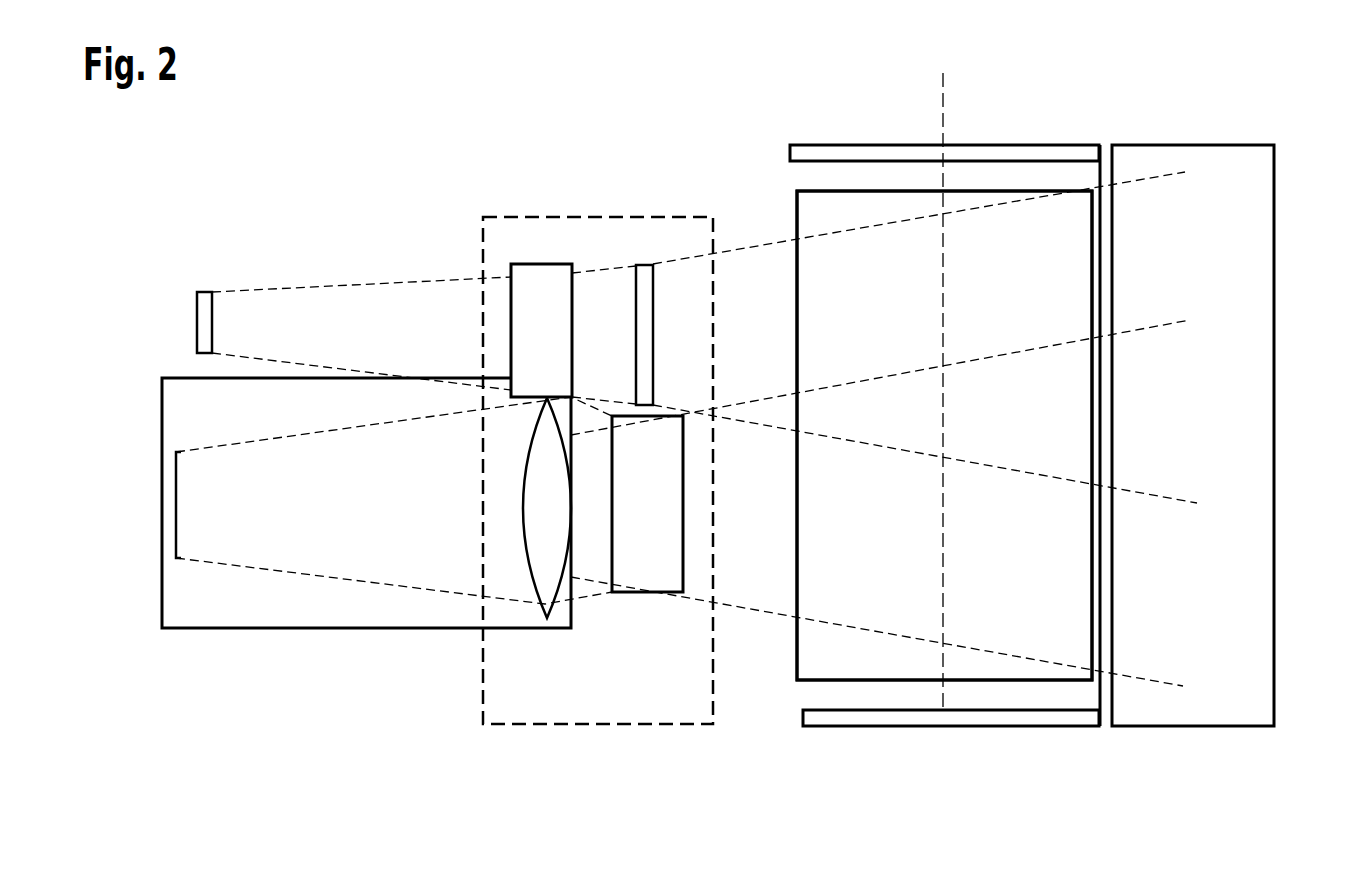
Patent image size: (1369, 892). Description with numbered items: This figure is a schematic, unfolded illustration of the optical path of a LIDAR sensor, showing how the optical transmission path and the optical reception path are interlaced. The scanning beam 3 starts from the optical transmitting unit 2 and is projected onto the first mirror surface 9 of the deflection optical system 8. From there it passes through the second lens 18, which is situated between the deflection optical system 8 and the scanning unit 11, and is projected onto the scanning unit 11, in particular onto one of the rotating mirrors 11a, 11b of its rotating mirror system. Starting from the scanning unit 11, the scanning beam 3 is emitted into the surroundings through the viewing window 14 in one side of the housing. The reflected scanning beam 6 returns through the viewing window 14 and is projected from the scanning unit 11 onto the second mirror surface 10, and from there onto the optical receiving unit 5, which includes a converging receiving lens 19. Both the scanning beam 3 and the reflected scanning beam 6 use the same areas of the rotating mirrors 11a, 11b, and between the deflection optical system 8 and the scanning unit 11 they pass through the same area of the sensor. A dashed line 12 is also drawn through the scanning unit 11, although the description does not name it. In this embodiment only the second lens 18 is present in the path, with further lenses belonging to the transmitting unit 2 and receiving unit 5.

The optical transmitting unit 2 is at (197, 318).
The scanning beam 3 is at (262, 290).
The optical receiving unit 5 is at (342, 628).
The reflected scanning beam 6 is at (754, 607).
The deflection optical system 8 is at (581, 725).
The first mirror surface 9 is at (546, 271).
The second mirror surface 10 is at (656, 572).
The scanning unit 11 is at (944, 458).
The rotating mirror 11a is at (877, 190).
The rotating mirror 11b is at (944, 435).
The axis 12 is at (943, 108).
The viewing window 14 is at (1196, 726).
The second lens 18 is at (643, 265).
The receiving lens 19 is at (530, 588).